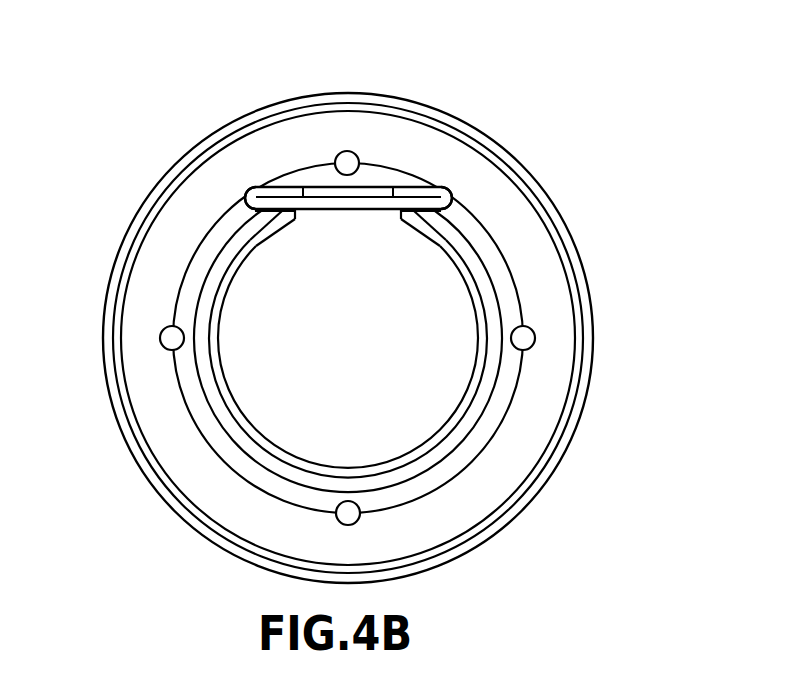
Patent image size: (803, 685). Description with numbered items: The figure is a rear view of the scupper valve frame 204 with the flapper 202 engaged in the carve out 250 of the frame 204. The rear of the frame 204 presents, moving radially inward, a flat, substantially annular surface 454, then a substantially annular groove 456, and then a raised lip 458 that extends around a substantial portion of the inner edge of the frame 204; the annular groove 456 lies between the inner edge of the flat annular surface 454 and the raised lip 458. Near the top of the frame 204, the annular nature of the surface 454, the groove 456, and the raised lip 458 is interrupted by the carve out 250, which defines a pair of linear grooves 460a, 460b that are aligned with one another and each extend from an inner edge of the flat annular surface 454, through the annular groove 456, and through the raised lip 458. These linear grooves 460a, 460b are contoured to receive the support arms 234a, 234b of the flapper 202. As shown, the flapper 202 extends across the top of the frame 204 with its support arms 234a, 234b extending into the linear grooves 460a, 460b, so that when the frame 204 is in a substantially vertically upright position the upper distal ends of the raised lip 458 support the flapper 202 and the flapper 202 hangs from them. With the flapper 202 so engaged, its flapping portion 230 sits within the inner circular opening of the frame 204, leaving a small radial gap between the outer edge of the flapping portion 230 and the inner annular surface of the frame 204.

The flapper 202 is at (372, 355).
The frame 204 is at (588, 152).
The flapping portion 230 is at (287, 422).
The support arm 234a is at (423, 203).
The support arm 234b is at (273, 203).
The carve out 250 is at (313, 178).
The flat, substantially annular surface 454 is at (200, 208).
The substantially annular groove 456 is at (192, 287).
The raised lip 458 is at (215, 270).
The linear groove 460a is at (432, 193).
The linear groove 460b is at (253, 191).